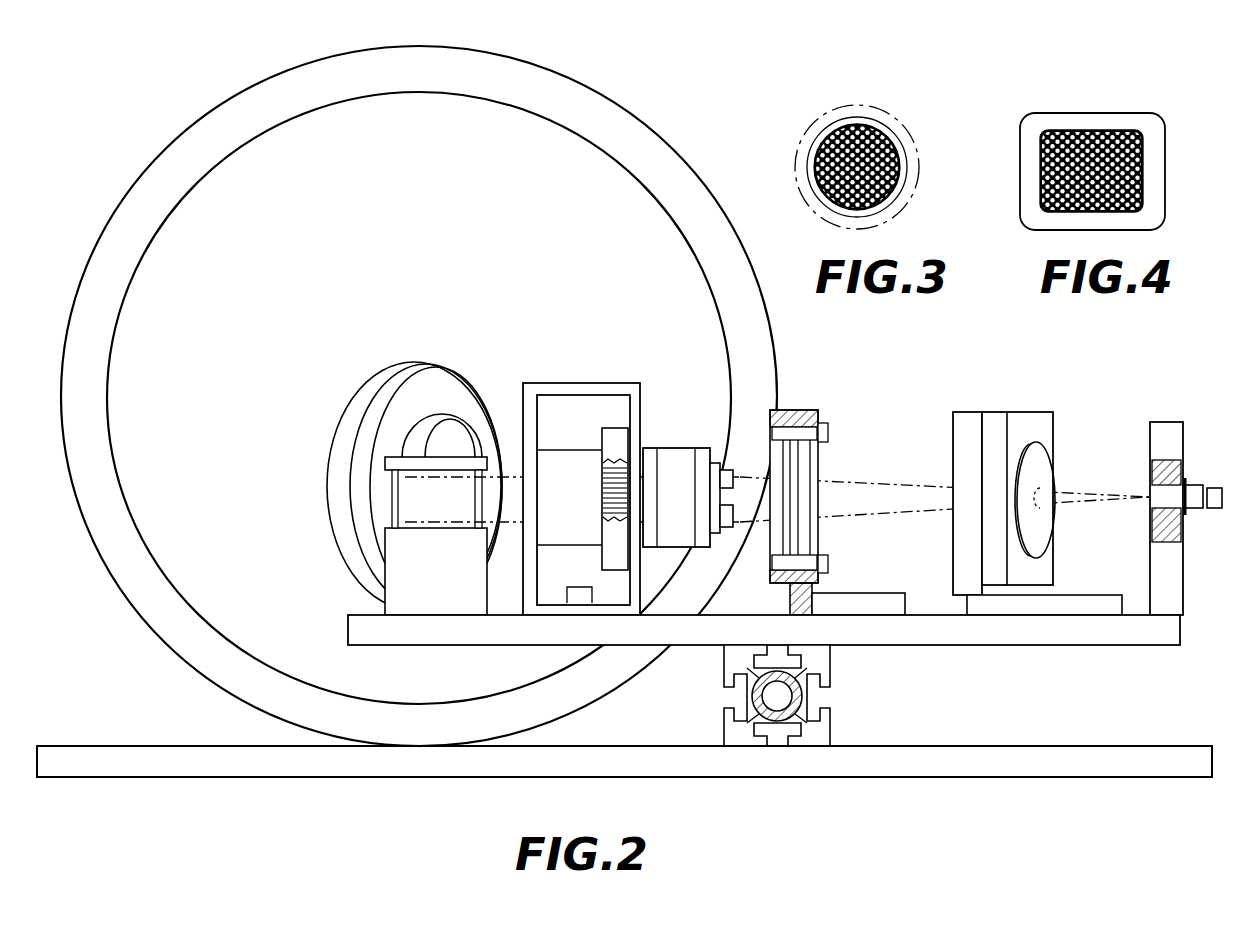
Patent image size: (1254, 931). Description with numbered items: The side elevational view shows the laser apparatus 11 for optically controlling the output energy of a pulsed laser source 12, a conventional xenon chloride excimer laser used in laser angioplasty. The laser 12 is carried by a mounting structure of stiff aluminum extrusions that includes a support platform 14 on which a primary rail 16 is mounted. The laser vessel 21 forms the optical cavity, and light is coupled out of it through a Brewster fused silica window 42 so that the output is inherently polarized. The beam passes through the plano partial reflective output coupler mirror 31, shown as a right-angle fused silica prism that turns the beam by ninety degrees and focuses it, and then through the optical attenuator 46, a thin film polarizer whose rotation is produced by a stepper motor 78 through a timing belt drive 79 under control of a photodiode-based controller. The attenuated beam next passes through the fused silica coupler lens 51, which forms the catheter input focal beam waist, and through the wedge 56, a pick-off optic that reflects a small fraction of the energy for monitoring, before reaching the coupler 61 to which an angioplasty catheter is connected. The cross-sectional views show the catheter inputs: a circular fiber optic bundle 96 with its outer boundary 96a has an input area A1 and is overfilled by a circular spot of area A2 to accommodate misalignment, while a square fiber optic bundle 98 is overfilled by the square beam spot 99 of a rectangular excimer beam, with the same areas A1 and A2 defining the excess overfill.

In FIG. 2, the laser apparatus 11 is at (862, 443).
In FIG. 2, the laser source 12 is at (674, 129).
In FIG. 2, the support platform 14 is at (982, 778).
In FIG. 2, the primary rail 16 is at (830, 722).
In FIG. 2, the laser vessel 21 is at (601, 93).
In FIG. 2, the output coupler mirror 31 is at (418, 498).
In FIG. 2, the Brewster window 42 is at (420, 443).
In FIG. 2, the optical attenuator 46 is at (577, 443).
In FIG. 2, the coupler lens 51 is at (777, 448).
In FIG. 2, the wedge 56 is at (1043, 467).
In FIG. 2, the coupler 61 is at (1193, 486).
In FIG. 2, the stepper motor 78 is at (673, 453).
In FIG. 2, the timing belt drive 79 is at (617, 440).
In FIG. 3, the circular fiber optic bundle 96 is at (832, 210).
In FIG. 3, the bundle sheath 96a is at (818, 128).
In FIG. 4, the square fiber optic bundle 98 is at (1040, 165).
In FIG. 4, the square beam spot 99 is at (1042, 123).
In FIG. 3, the input area A1 is at (877, 132).
In FIG. 4, the input area A1 is at (1143, 143).
In FIG. 3, the beam spot overfill area A2 is at (885, 210).
In FIG. 4, the beam spot overfill area A2 is at (1150, 215).